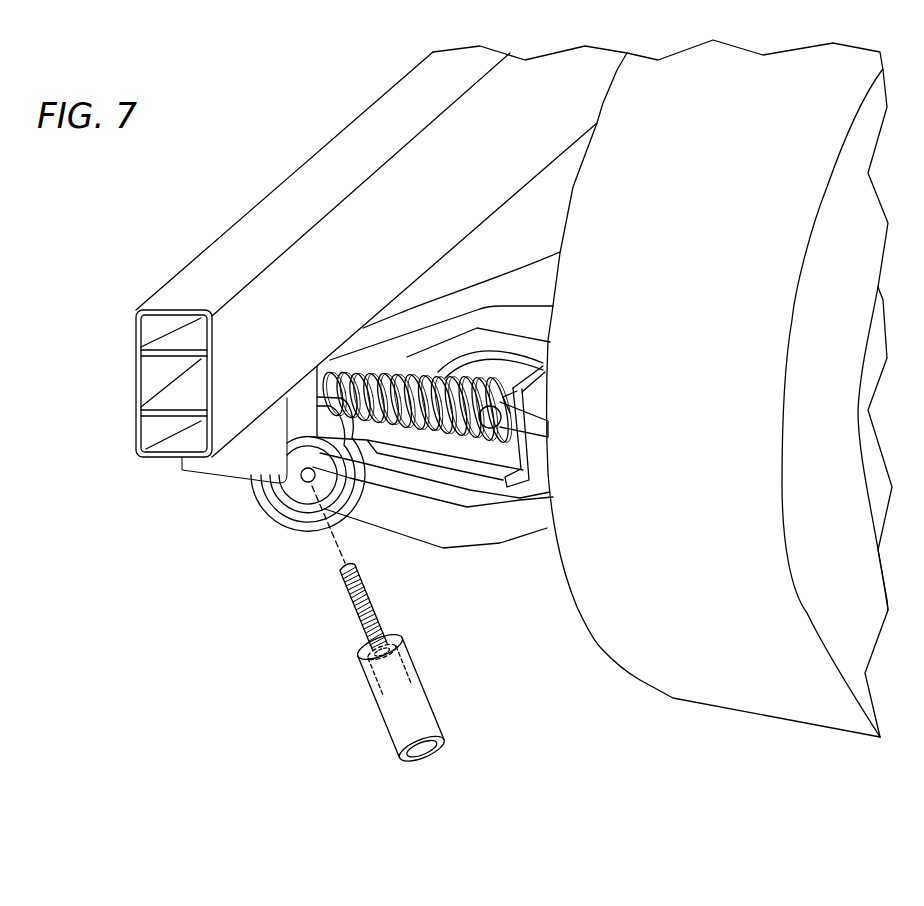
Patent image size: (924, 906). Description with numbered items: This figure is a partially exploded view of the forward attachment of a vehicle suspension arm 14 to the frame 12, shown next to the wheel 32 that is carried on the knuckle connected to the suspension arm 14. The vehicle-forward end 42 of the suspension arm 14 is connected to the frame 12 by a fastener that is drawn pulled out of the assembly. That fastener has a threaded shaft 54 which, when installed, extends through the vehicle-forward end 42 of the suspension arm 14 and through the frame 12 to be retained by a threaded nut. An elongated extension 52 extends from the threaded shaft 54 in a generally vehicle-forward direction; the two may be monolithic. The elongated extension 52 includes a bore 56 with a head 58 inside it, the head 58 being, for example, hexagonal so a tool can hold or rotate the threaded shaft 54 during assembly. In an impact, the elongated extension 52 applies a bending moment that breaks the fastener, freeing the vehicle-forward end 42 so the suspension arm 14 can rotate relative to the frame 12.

The frame 12 is at (335, 162).
The suspension arm 14 is at (457, 520).
The wheel 32 is at (632, 630).
The vehicle-forward end 42 is at (427, 517).
The elongated extension 52 is at (383, 714).
The threaded shaft 54 is at (347, 602).
The bore 56 is at (423, 753).
The head 58 is at (367, 688).